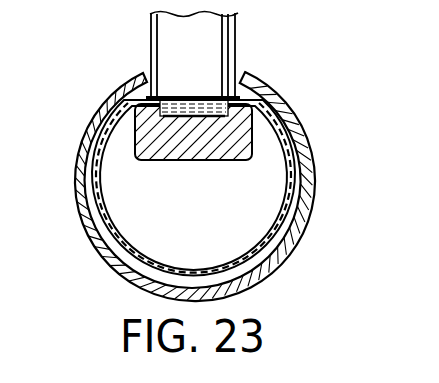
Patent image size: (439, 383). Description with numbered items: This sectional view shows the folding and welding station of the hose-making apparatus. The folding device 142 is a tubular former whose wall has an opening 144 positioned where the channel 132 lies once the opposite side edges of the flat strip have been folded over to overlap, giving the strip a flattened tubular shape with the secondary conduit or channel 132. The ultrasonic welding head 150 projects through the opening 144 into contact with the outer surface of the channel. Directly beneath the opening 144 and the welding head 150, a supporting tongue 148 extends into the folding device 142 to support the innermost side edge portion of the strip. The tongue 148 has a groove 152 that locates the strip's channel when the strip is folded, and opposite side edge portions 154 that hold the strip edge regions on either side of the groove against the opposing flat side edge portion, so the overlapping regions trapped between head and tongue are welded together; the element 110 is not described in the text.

The catheter tube 110 is at (177, 272).
The channel 132 is at (205, 97).
The folding device 142 is at (295, 222).
The opening 144 is at (237, 77).
The supporting tongue 148 is at (210, 155).
The welding head 150 is at (163, 70).
The groove 152 is at (175, 160).
The side edge portions 154 is at (100, 141).